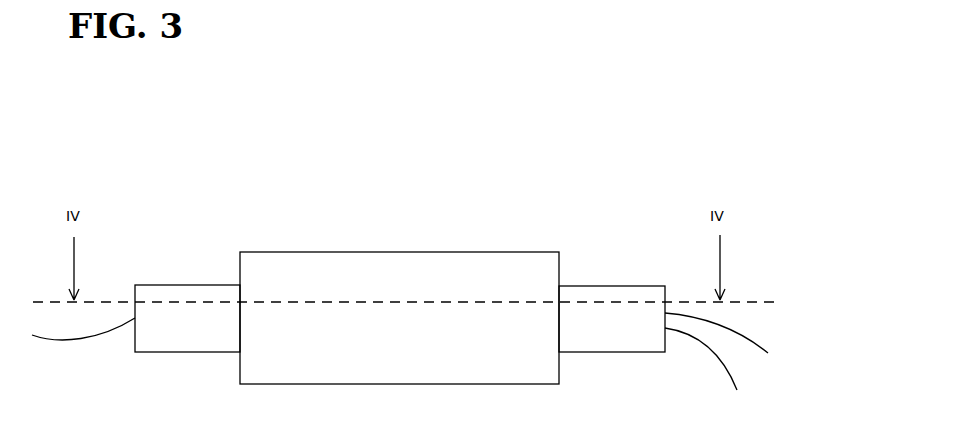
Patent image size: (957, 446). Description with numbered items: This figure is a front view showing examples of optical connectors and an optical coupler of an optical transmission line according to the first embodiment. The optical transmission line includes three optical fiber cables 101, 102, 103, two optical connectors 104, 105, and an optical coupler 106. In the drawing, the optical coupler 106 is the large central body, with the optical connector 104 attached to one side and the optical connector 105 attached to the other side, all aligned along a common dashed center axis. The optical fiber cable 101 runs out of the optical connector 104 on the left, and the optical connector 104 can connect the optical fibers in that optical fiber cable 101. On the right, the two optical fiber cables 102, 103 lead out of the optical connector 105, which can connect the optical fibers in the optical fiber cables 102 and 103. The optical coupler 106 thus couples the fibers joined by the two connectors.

The optical fiber cable 101 is at (70, 342).
The optical fiber cable 102 is at (745, 340).
The optical fiber cable 103 is at (707, 347).
The optical connector 104 is at (182, 285).
The optical connector 105 is at (610, 286).
The optical coupler 106 is at (378, 252).